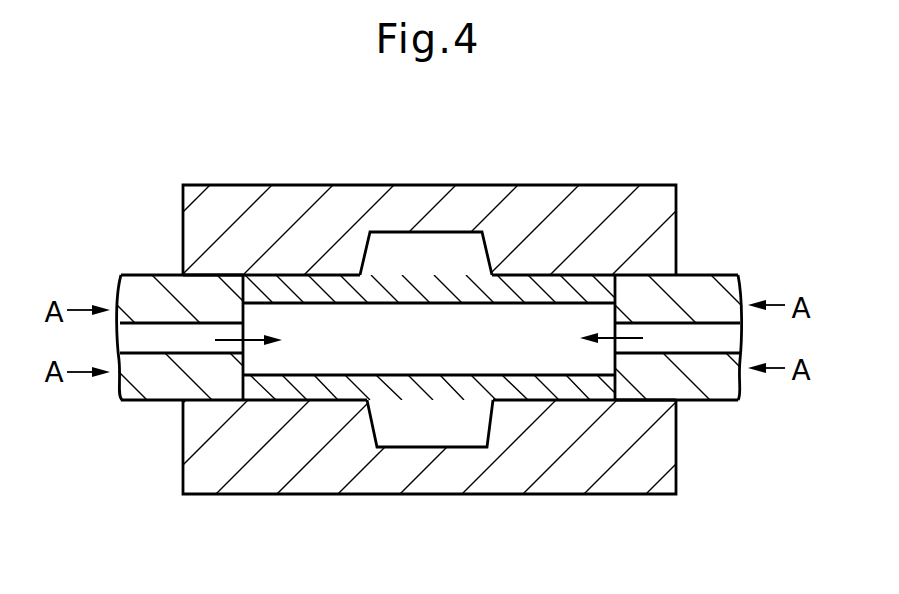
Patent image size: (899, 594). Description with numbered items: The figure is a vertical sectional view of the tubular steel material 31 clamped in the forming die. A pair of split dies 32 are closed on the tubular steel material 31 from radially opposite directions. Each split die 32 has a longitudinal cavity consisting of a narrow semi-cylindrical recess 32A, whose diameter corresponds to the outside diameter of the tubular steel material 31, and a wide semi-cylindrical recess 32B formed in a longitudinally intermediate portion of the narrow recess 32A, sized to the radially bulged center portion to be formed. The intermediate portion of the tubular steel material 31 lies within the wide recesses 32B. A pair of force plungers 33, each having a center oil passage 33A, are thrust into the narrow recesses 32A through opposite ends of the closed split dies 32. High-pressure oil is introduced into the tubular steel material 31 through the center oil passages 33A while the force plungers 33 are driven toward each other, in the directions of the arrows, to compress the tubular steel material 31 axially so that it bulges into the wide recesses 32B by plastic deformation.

The tubular steel material 31 is at (580, 283).
The split dies 32 is at (310, 207).
The narrow semi-cylindrical recess 32A is at (199, 276).
The wide semi-cylindrical recess 32B is at (431, 233).
The force plunger 33 is at (143, 300).
The center oil passage 33A is at (156, 353).